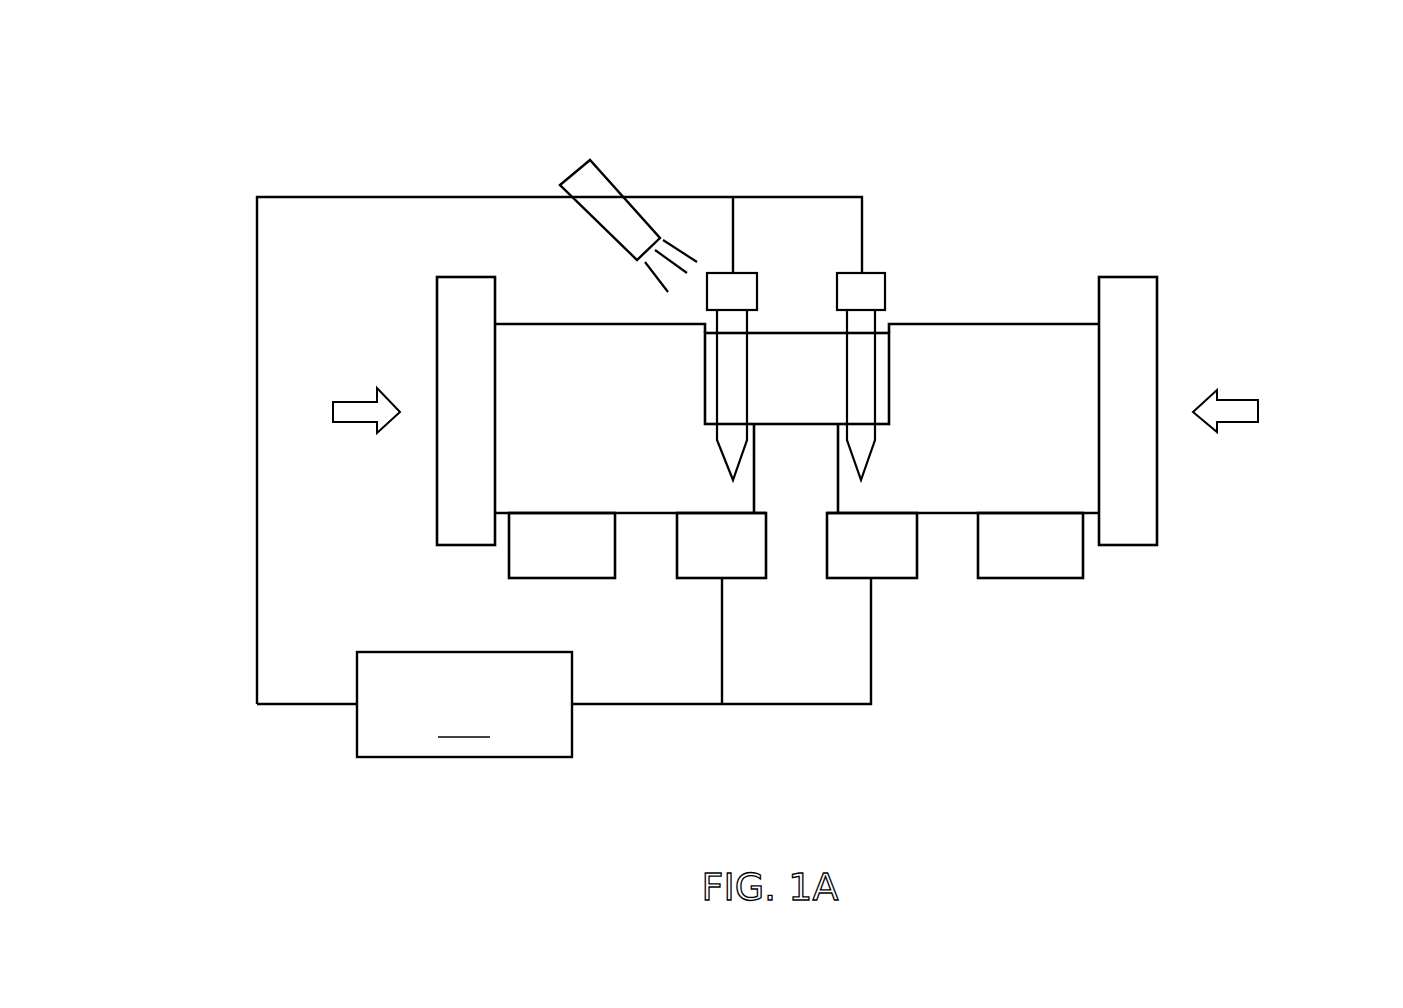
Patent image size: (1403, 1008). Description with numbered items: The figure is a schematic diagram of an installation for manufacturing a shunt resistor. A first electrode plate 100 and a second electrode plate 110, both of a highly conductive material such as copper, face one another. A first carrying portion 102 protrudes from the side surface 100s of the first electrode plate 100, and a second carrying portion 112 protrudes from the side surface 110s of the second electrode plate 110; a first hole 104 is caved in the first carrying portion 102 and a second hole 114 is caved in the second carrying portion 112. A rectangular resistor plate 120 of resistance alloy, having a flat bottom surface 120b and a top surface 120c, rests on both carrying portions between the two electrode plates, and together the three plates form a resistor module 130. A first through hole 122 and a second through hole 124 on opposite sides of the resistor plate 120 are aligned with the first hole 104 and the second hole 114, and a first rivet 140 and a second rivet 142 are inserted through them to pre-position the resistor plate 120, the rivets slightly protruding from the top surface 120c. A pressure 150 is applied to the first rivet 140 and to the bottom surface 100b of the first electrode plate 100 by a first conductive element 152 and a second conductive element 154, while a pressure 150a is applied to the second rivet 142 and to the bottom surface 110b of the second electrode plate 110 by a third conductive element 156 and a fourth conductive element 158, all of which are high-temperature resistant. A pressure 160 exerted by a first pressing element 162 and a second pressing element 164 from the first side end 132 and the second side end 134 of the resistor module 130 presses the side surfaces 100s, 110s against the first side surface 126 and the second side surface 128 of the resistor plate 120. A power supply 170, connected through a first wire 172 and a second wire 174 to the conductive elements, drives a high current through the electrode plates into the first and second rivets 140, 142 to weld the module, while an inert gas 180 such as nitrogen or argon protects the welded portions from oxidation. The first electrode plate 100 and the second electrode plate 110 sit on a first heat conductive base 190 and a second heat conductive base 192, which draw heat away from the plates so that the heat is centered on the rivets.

The first electrode plate 100 is at (747, 492).
The side surface of the first electrode plate 100s is at (703, 353).
The bottom surface of the first electrode plate 100b is at (636, 513).
The first carrying portion 102 is at (728, 500).
The first hole 104 is at (718, 453).
The second electrode plate 110 is at (947, 493).
The side surface of the second electrode plate 110s is at (892, 397).
The bottom surface of the second electrode plate 110b is at (1093, 513).
The second carrying portion 112 is at (876, 494).
The second hole 114 is at (877, 455).
The resistor plate 120 is at (828, 405).
The bottom surface of the resistor plate 120b is at (791, 423).
The top surface of the resistor plate 120c is at (780, 333).
The first through hole 122 is at (735, 400).
The second through hole 124 is at (853, 390).
The first side surface of the resistor plate 126 is at (709, 338).
The second side surface of the resistor plate 128 is at (886, 342).
The resistor module 130 is at (997, 760).
The first side end 132 is at (492, 407).
The second side end 134 is at (1101, 394).
The first rivet 140 is at (470, 380).
The second rivet 142 is at (865, 437).
The pressure 150 is at (720, 268).
The pressure 150a is at (850, 268).
The first conductive element 152 is at (745, 283).
The second conductive element 154 is at (758, 565).
The third conductive element 156 is at (872, 280).
The fourth conductive element 158 is at (897, 522).
The pressure 160 is at (333, 412).
The first pressing element 162 is at (437, 306).
The second pressing element 164 is at (1145, 322).
The power supply 170 is at (464, 704).
The first wire 172 is at (257, 517).
The second wire 174 is at (598, 705).
The inert gas 180 is at (650, 273).
The first heat conductive base 190 is at (533, 557).
The second heat conductive base 192 is at (1032, 560).